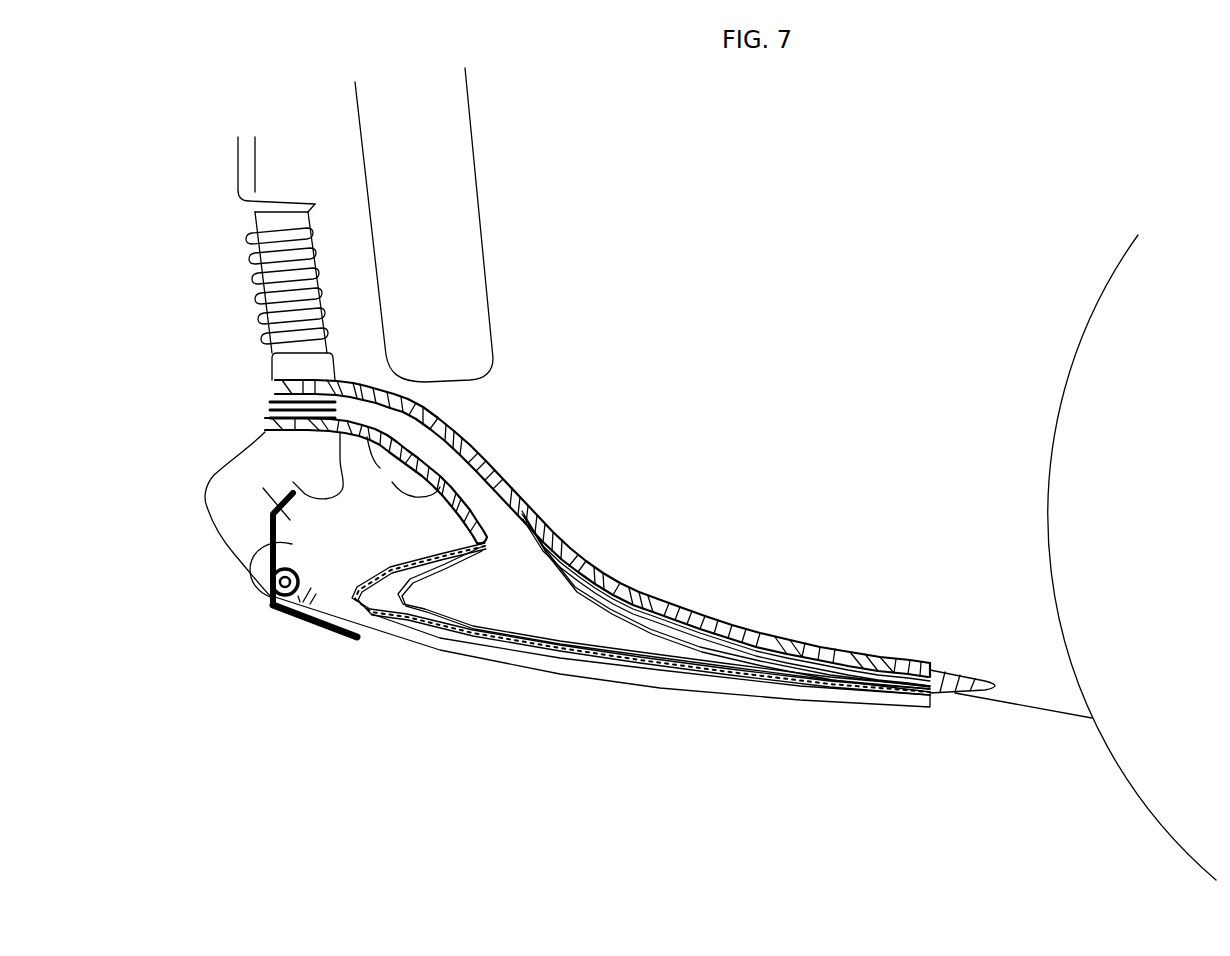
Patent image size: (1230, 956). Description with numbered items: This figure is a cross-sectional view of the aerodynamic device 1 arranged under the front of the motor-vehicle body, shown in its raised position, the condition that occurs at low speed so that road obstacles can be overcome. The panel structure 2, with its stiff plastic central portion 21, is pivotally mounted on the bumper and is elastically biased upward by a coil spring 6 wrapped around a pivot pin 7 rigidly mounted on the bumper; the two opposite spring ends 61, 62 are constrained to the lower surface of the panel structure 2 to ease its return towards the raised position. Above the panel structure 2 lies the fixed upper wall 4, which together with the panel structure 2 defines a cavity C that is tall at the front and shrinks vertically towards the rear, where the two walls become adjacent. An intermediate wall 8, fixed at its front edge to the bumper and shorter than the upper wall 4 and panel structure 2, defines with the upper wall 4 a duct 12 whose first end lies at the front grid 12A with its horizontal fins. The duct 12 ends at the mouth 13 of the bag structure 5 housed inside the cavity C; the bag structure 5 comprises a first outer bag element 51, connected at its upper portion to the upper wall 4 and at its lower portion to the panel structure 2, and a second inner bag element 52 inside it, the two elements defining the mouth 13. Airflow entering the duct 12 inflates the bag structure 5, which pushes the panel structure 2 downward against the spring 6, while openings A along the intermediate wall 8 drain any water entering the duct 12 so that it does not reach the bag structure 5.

The aerodynamic device 1 is at (228, 714).
The panel structure 2 is at (475, 664).
The upper wall 4 is at (490, 453).
The bag structure 5 is at (607, 600).
The spring 6 is at (293, 548).
The pivot pin 7 is at (272, 577).
The intermediate wall 8 is at (464, 517).
The duct 12 is at (444, 434).
The front grid 12A is at (270, 410).
The mouth 13 is at (507, 528).
The central portion 21 is at (570, 670).
The first outer bag element 51 is at (367, 627).
The second inner bag element 52 is at (672, 632).
The spring end 61 is at (316, 634).
The spring end 62 is at (288, 556).
The openings A is at (403, 467).
The cavity C is at (320, 500).